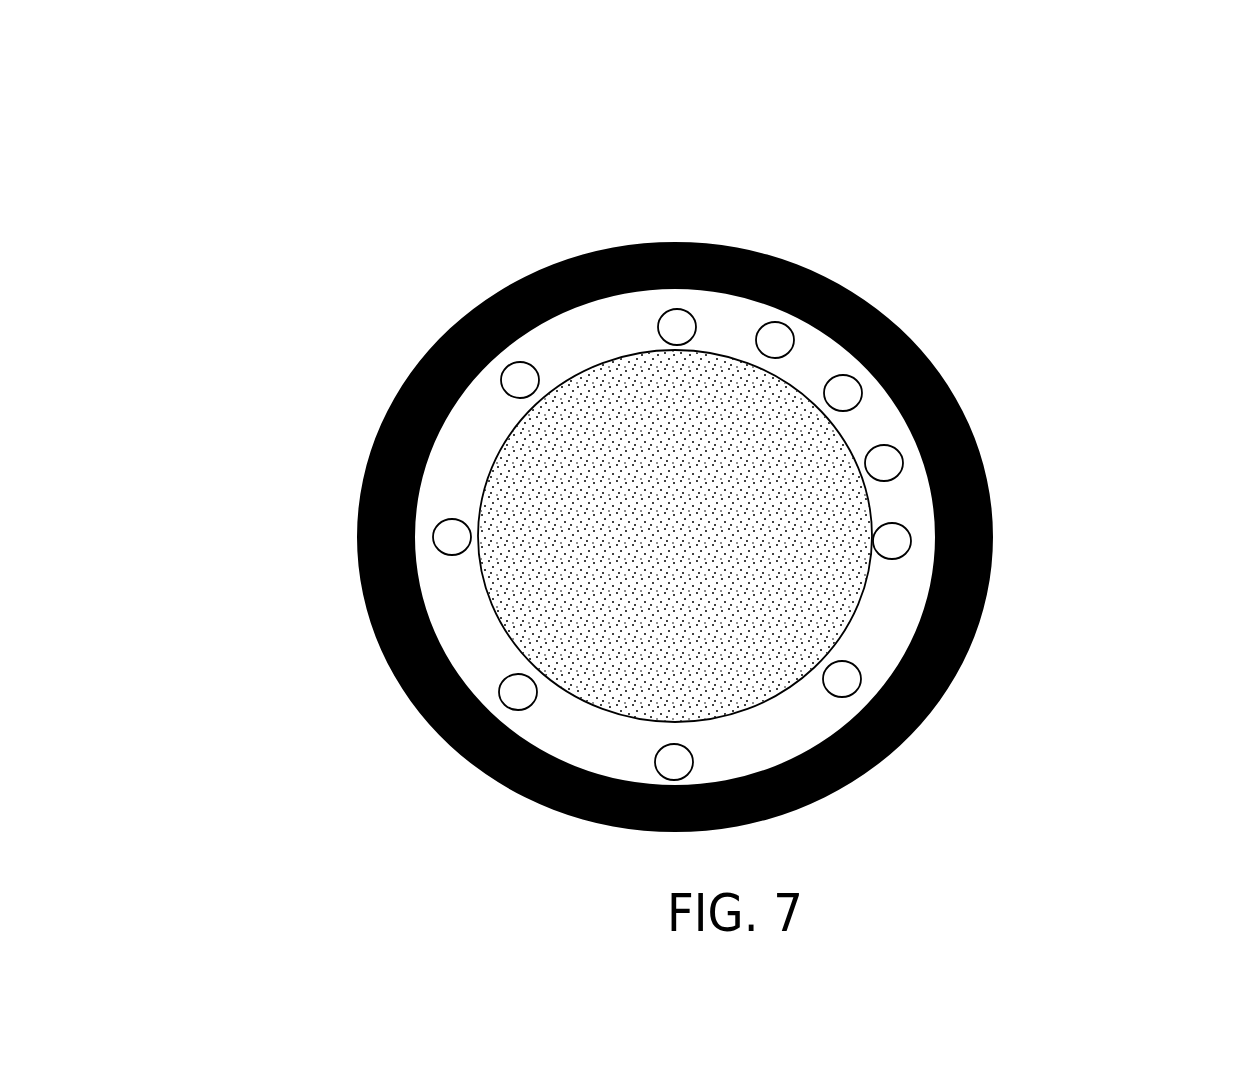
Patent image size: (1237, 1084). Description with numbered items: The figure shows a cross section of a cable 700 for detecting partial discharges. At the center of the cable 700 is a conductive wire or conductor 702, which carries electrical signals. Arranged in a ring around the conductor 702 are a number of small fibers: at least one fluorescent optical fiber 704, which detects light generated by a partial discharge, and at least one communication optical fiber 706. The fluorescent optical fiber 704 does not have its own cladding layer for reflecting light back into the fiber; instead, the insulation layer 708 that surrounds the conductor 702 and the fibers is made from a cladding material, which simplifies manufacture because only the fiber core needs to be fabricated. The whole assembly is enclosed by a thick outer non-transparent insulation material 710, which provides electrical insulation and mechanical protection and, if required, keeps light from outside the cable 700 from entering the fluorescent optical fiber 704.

The cable 700 is at (705, 479).
The conductor 702 is at (688, 536).
The fluorescent optical fiber 704 is at (520, 368).
The communication optical fiber 706 is at (800, 335).
The insulation layer 708 is at (805, 718).
The non-transparent insulation material 710 is at (965, 617).